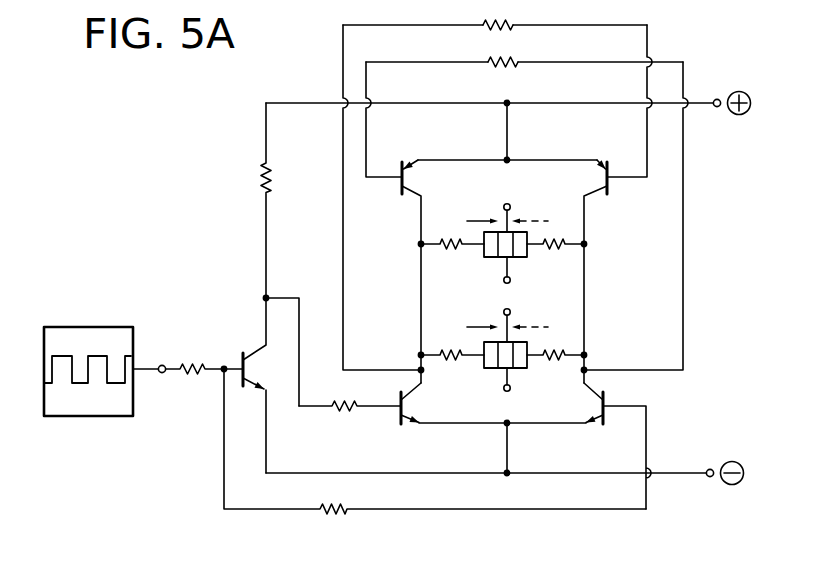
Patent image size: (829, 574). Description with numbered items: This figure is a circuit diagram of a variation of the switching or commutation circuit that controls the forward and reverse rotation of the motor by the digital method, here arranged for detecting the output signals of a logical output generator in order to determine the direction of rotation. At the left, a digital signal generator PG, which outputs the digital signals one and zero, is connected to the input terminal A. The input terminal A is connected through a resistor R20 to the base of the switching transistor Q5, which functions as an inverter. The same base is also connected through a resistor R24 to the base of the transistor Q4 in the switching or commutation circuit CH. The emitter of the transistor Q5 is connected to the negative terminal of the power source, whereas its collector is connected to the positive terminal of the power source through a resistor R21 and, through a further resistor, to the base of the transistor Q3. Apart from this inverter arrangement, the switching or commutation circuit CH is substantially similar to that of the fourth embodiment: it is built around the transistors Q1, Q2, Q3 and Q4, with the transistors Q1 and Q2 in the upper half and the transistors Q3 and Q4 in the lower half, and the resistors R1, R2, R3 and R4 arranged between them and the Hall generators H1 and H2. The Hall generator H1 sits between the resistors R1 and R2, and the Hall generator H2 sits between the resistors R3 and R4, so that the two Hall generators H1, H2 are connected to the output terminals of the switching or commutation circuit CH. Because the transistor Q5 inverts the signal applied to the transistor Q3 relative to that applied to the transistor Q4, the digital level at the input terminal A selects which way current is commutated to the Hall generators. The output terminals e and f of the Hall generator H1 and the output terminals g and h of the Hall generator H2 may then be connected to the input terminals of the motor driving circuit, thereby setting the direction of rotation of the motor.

The transistor Q1 is at (418, 177).
The transistor Q2 is at (584, 177).
The transistor Q3 is at (423, 409).
The transistor Q4 is at (585, 409).
The switching transistor Q5 is at (250, 376).
The resistor R1 is at (452, 250).
The resistor R2 is at (555, 260).
The resistor R3 is at (450, 365).
The resistor R4 is at (553, 365).
The resistor R20 is at (196, 361).
The resistor R21 is at (272, 178).
The resistor R24 is at (334, 518).
The Hall generator H1 is at (511, 232).
The Hall generator H2 is at (511, 342).
The switching or commutation circuit CH is at (599, 266).
The digital signal generator PG is at (136, 329).
The input terminal A is at (173, 357).
The output terminal e is at (502, 195).
The output terminal f is at (499, 279).
The output terminal g is at (500, 311).
The output terminal h is at (499, 388).